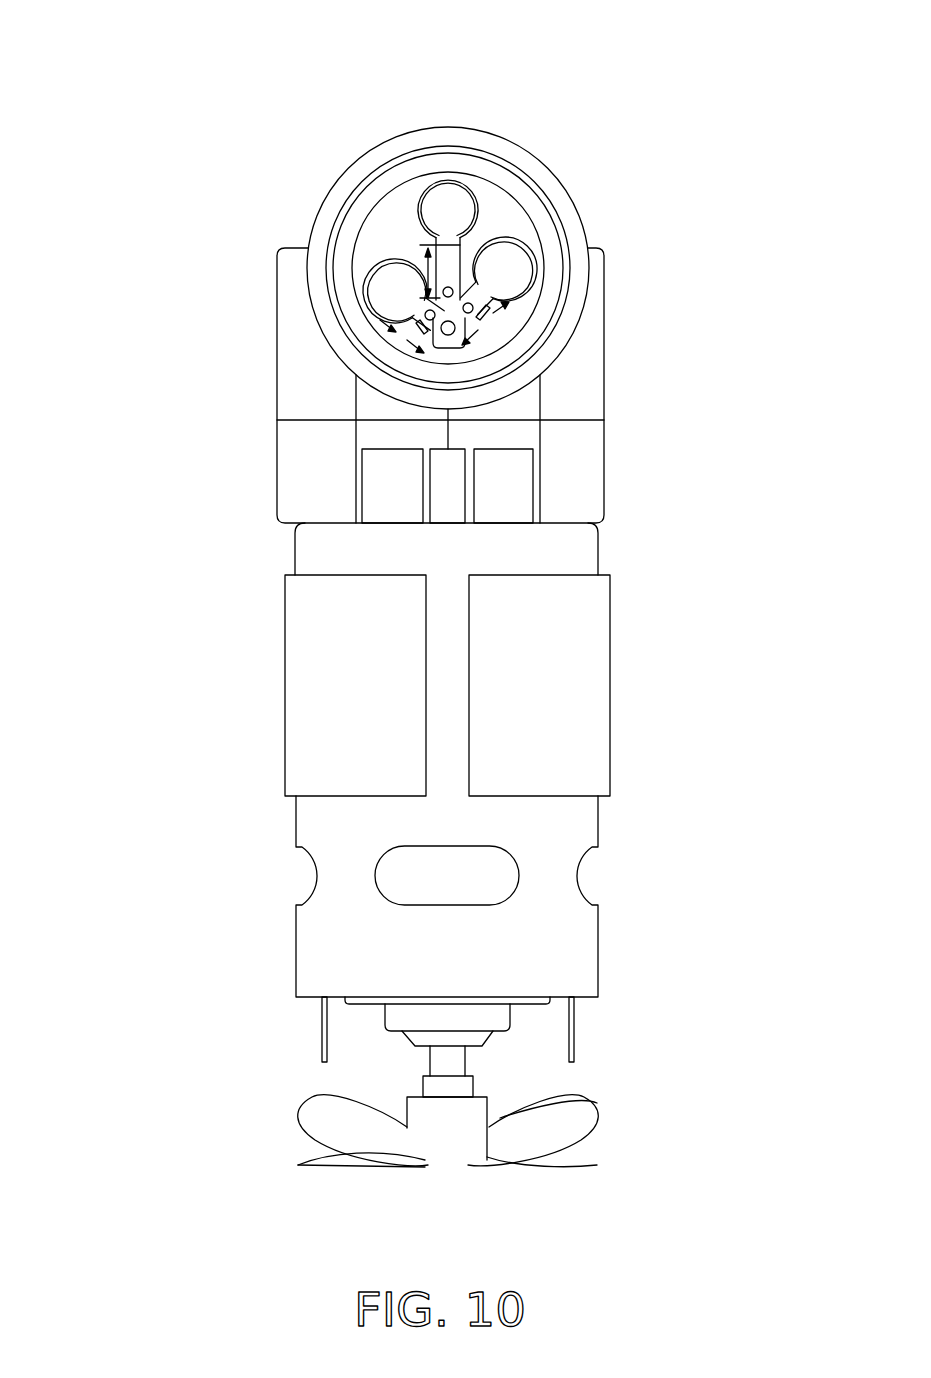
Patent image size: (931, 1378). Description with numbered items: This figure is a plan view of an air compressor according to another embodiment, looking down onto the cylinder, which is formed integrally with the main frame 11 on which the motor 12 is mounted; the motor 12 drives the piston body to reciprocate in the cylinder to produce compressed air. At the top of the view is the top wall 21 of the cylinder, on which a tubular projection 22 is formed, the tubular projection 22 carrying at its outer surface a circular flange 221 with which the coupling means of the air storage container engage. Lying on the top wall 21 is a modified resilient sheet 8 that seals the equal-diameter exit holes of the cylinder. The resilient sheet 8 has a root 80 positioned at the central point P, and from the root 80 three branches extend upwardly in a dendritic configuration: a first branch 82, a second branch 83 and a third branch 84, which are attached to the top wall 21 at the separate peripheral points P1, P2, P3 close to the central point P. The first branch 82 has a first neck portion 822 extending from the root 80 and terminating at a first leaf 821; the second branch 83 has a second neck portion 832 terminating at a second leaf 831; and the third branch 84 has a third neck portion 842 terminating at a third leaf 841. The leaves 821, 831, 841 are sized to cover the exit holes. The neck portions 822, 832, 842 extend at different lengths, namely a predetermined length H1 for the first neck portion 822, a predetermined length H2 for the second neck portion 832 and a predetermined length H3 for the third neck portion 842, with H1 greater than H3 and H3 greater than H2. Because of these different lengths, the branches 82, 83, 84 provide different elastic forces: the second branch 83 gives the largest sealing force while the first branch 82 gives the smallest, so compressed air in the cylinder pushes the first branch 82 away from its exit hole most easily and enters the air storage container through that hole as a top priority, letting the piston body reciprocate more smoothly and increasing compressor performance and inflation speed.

The resilient sheet 8 is at (428, 248).
The first branch 82 is at (438, 159).
The first leaf 821 is at (383, 217).
The first neck portion 822 is at (455, 252).
The second branch 83 is at (281, 302).
The second leaf 831 is at (358, 314).
The second neck portion 832 is at (398, 320).
The third branch 84 is at (600, 252).
The third leaf 841 is at (520, 277).
The third neck portion 842 is at (530, 292).
The root 80 is at (455, 340).
The central point P is at (450, 350).
The peripheral point P1 is at (458, 290).
The peripheral point P2 is at (445, 375).
The peripheral point P3 is at (500, 345).
The predetermined length H1 is at (372, 218).
The predetermined length H2 is at (435, 362).
The predetermined length H3 is at (520, 380).
The main frame 11 is at (325, 470).
The motor 12 is at (318, 838).
The top wall 21 is at (380, 215).
The tubular projection 22 is at (365, 198).
The circular flange 221 is at (562, 193).